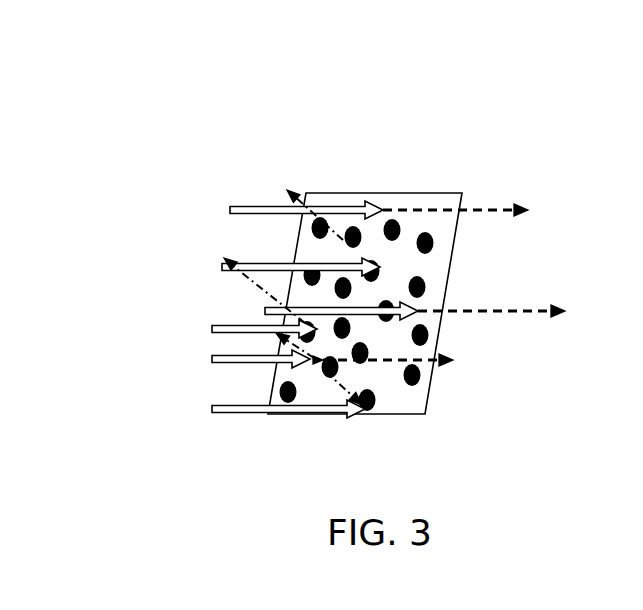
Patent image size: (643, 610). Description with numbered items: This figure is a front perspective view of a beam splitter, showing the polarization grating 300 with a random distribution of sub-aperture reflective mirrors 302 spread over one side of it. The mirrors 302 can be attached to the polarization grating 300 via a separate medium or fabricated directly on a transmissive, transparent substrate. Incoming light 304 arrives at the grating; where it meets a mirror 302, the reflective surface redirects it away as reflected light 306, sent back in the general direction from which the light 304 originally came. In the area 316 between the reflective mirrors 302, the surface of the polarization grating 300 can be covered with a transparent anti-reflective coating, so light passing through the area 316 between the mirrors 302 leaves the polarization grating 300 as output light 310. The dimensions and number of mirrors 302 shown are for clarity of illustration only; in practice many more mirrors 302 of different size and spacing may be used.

The polarization grating 300 is at (105, 78).
The sub-aperture reflective mirrors 302 is at (418, 386).
The light 304 is at (237, 207).
The reflected light 306 is at (342, 238).
The output light 310 is at (487, 206).
The area between the reflective mirrors 316 is at (438, 268).